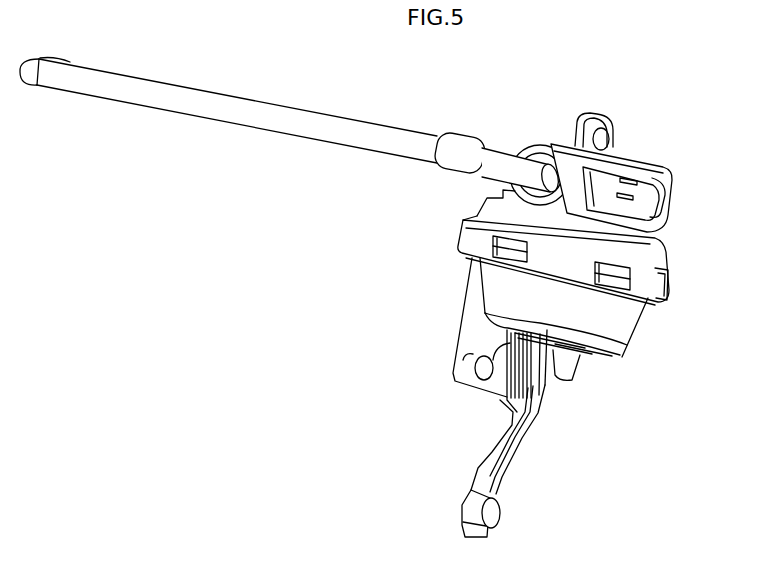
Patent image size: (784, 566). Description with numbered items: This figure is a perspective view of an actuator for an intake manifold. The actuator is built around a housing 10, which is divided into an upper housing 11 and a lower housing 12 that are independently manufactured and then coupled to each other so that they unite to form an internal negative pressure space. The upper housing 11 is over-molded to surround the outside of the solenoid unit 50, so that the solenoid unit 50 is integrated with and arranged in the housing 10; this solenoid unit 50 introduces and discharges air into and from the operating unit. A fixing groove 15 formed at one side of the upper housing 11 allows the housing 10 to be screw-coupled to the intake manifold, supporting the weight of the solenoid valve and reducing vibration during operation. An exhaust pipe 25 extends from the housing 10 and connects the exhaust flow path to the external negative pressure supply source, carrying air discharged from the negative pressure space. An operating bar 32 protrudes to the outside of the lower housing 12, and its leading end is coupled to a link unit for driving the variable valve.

The housing 10 is at (616, 251).
The upper housing 11 is at (652, 252).
The lower housing 12 is at (645, 312).
The fixing groove 15 is at (606, 118).
The exhaust pipe 25 is at (258, 124).
The operating bar 32 is at (522, 445).
The solenoid unit 50 is at (661, 152).